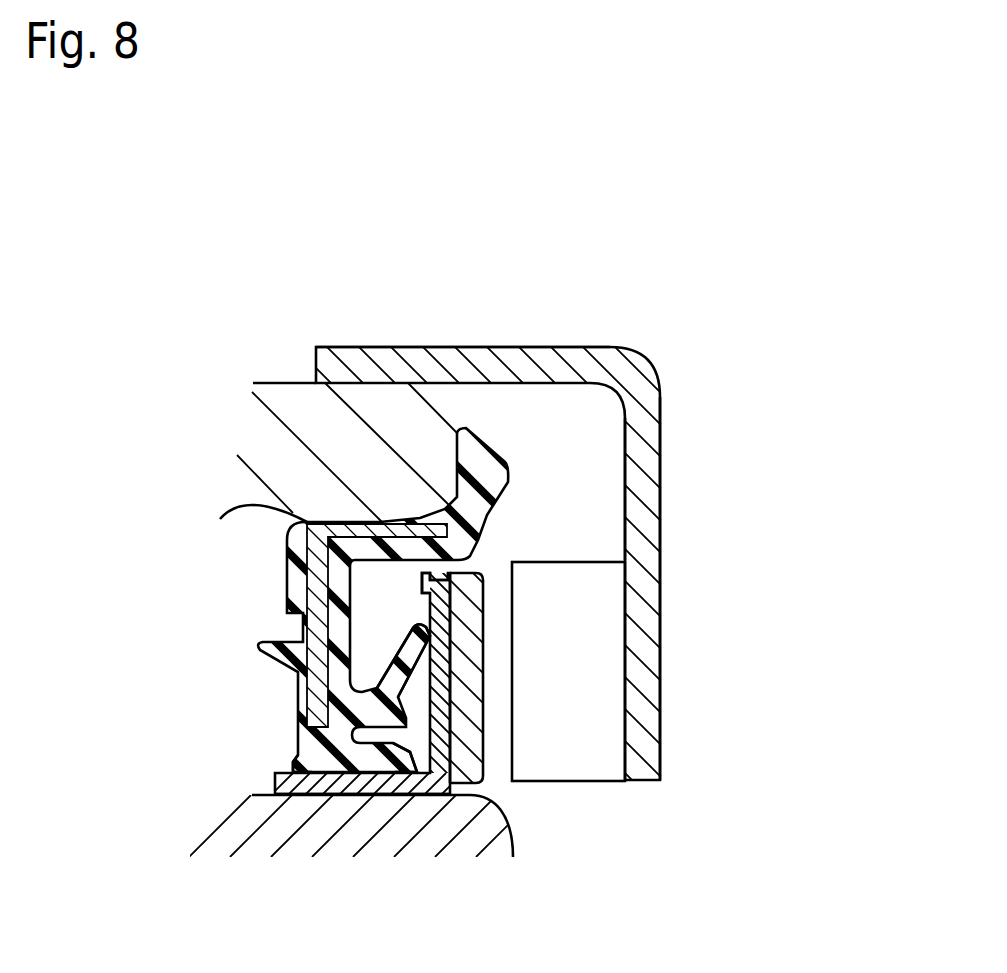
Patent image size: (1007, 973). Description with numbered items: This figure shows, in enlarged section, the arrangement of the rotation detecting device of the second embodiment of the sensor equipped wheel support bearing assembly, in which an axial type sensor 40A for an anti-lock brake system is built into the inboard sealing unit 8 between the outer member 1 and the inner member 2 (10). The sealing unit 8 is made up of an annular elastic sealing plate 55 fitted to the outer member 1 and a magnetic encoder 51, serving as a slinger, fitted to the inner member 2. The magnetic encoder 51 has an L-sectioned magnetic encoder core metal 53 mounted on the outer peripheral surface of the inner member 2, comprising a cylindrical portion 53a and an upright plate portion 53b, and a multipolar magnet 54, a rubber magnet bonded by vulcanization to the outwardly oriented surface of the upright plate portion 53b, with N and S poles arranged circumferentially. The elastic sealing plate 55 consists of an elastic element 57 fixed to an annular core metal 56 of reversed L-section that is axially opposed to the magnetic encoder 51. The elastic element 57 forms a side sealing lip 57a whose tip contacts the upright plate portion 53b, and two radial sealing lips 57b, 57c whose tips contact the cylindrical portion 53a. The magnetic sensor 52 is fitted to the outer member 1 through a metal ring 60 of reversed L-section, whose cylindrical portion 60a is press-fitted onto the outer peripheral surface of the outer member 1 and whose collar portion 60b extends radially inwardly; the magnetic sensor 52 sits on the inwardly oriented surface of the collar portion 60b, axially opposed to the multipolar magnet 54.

The outer member 1 is at (270, 447).
The inner member 2 is at (409, 863).
The shaft / outer member 10 is at (472, 838).
The inboard sealing unit 8 is at (503, 531).
The sensor 40A is at (650, 685).
The magnetic encoder 51 is at (499, 741).
The magnetic sensor 52 is at (600, 667).
The magnetic encoder core metal 53 is at (431, 742).
The cylindrical portion 53a is at (332, 782).
The upright plate portion 53b is at (448, 657).
The multipolar magnet 54 is at (450, 678).
The elastic sealing plate 55 is at (375, 540).
The core metal 56 is at (282, 577).
The elastic element 57 is at (332, 540).
The side sealing lip 57a is at (395, 660).
The radial sealing lip 57b is at (417, 773).
The radial sealing lip 57c is at (307, 763).
The metal ring 60 is at (583, 499).
The cylindrical portion 60a is at (470, 347).
The collar portion 60b is at (666, 508).